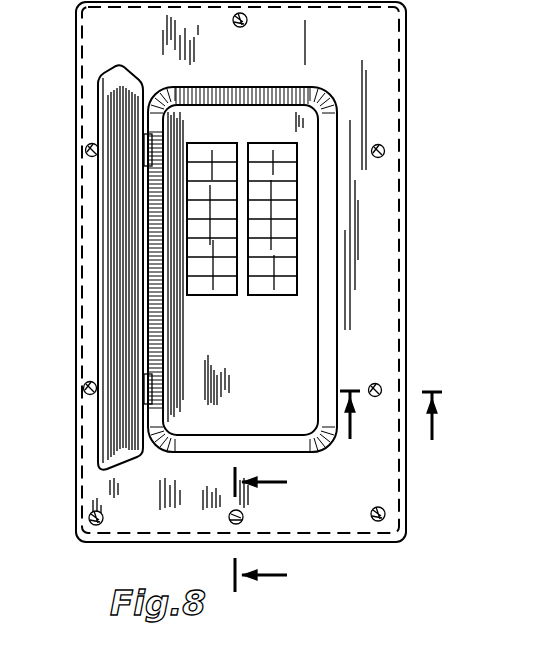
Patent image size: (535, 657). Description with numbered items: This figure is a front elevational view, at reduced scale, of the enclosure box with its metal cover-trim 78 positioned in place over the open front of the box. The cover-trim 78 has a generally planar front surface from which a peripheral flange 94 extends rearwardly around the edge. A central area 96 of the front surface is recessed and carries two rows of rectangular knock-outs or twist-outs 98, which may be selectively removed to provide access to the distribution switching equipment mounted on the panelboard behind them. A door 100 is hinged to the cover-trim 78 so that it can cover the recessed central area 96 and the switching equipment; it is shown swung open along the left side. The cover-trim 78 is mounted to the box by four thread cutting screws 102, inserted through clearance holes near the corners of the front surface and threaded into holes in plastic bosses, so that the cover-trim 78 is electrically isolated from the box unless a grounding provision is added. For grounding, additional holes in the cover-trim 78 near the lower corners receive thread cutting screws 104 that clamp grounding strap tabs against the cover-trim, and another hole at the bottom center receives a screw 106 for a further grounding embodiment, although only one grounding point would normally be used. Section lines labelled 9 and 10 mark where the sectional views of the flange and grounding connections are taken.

The cover-trim 78 is at (407, 22).
The peripheral flange 94 is at (404, 236).
The central area 96 is at (263, 358).
The knock-outs 98 is at (272, 143).
The door 100 is at (118, 262).
The thread cutting screws 102 is at (86, 151).
The thread cutting screws 104 is at (70, 543).
The screws 106 is at (234, 524).
The section line 9 is at (358, 466).
The section line 10 is at (272, 529).